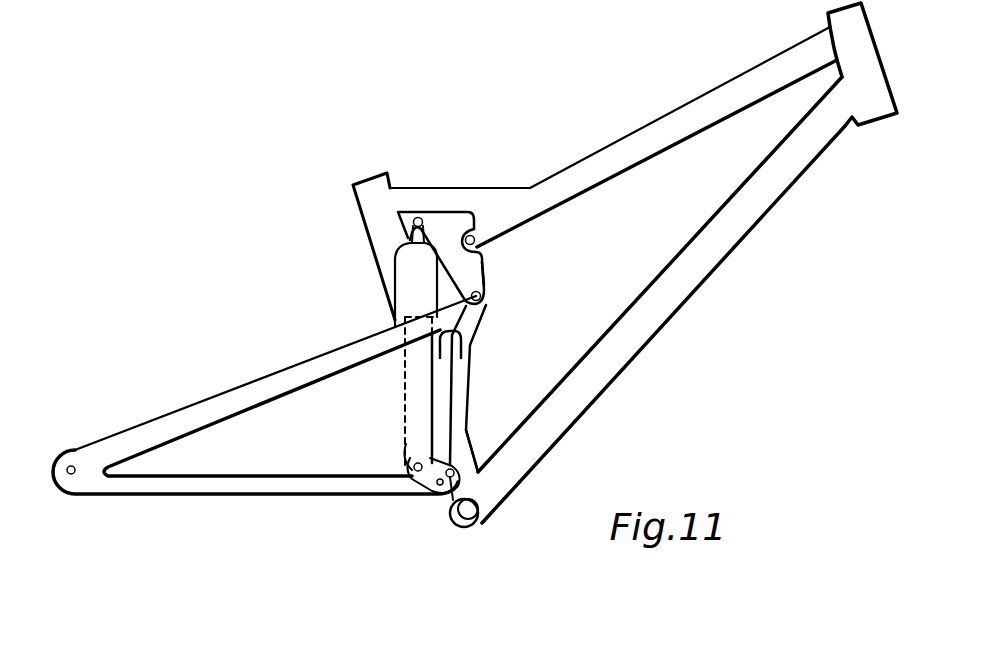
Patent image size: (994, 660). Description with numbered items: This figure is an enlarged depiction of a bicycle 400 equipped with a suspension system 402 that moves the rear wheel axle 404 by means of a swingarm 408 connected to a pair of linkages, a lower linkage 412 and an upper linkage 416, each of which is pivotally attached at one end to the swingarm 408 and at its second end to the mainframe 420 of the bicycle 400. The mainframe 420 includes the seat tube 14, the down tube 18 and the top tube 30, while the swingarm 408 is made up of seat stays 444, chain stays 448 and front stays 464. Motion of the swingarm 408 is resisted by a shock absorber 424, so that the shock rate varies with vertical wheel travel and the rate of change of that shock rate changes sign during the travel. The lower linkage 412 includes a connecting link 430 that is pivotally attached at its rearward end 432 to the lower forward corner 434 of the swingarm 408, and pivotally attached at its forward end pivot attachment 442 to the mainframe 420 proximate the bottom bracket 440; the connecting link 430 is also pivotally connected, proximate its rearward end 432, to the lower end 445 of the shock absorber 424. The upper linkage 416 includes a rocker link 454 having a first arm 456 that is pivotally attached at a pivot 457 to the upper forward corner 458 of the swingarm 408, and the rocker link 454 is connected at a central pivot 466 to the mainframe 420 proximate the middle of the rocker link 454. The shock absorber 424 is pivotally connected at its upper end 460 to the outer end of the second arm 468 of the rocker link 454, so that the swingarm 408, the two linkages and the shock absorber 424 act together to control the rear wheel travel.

The bicycle 400 is at (557, 135).
The mainframe 420 is at (672, 108).
The top tube 30 is at (666, 137).
The down tube 18 is at (698, 246).
The bottom bracket 440 is at (483, 515).
The suspension system 402 is at (264, 413).
The swingarm 408 is at (182, 360).
The seat stays 444 is at (223, 393).
The chain stays 448 is at (248, 492).
The rear wheel axle 404 is at (73, 464).
The rocker link 454 is at (488, 244).
The first arm 456 is at (486, 274).
The pivot 457 is at (488, 300).
The upper forward corner 458 is at (486, 321).
The front stays 464 is at (482, 343).
The central pivot 466 is at (478, 232).
The second arm 468 is at (430, 218).
The upper linkage 416 is at (397, 345).
The seat tube 14 is at (417, 354).
The shock absorber 424 is at (398, 300).
The upper end 460 is at (412, 238).
The forward end pivot attachment 442 is at (472, 433).
The lower forward corner 434 is at (398, 477).
The lower end 445 is at (410, 467).
The rearward end 432 is at (440, 486).
The connecting link 430 is at (415, 447).
The lower linkage 412 is at (444, 527).